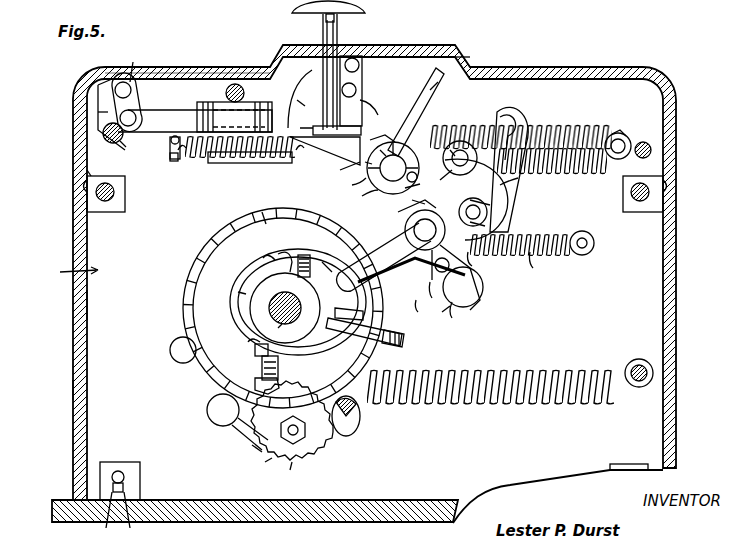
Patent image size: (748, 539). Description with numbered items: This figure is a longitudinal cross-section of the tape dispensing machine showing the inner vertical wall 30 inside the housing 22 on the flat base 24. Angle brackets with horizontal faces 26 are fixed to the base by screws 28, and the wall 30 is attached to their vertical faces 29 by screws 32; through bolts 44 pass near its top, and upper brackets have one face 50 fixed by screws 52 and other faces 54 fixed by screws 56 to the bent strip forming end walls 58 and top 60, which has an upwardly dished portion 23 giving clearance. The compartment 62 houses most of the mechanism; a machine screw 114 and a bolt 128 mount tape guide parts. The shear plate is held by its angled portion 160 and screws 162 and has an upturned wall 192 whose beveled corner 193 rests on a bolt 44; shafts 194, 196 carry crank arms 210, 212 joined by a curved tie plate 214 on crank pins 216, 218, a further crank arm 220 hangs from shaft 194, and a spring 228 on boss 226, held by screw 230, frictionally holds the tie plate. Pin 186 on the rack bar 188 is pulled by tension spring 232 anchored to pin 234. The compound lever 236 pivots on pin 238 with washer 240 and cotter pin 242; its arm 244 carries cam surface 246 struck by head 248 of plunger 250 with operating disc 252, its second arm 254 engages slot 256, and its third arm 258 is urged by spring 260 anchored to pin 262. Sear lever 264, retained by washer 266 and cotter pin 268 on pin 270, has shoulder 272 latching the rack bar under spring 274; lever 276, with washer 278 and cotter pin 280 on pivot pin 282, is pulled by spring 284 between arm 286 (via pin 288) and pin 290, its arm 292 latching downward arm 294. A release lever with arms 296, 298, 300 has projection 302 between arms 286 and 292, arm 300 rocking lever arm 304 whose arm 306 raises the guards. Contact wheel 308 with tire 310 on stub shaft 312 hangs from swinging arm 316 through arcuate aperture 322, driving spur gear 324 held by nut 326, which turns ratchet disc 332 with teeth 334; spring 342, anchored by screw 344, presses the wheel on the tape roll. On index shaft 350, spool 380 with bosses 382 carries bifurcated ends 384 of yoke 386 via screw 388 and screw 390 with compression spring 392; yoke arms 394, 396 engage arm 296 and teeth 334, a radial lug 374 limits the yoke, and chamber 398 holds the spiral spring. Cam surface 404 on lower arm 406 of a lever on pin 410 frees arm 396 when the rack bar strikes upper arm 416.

The housing 22 is at (655, 72).
The upwardly-dished portion 23 is at (425, 50).
The base 24 is at (405, 522).
The horizontal faces 26 is at (138, 515).
The screws 28 is at (101, 515).
The vertical faces 29 is at (120, 462).
The inner vertical wall 30 is at (568, 78).
The screws 32 is at (125, 473).
The through bolts 44 is at (102, 132).
The bracket face 50 is at (108, 212).
The screws 52 is at (116, 186).
The bracket faces 54 is at (85, 200).
The screws 56 is at (85, 178).
The end walls 58 is at (73, 388).
The top 60 is at (210, 72).
The compartment 62 is at (65, 274).
The machine screw 114 is at (262, 218).
The bolt 128 is at (170, 355).
The downwardly angled portion 160 is at (246, 163).
The screws 162 is at (242, 164).
The vertical pin 186 is at (170, 156).
The rack bar 188 is at (405, 128).
The vertical wall 192 is at (97, 92).
The beveled corner 193 is at (98, 116).
The shaft 194 is at (357, 90).
The shaft 196 is at (145, 63).
The crank arm 210 is at (364, 70).
The crank arm 212 is at (136, 100).
The curved tie plate 214 is at (166, 132).
The crank pin 216 is at (360, 65).
The crank pin 218 is at (115, 152).
The crank arm 220 is at (304, 95).
The boss 226 is at (292, 86).
The spring 228 is at (270, 112).
The screw 230 is at (226, 92).
The tension spring 232 is at (181, 167).
The pin 234 is at (338, 172).
The compound lever 236 is at (346, 191).
The pin 238 is at (358, 204).
The washer 240 is at (371, 148).
The cotter pin 242 is at (398, 213).
The arm 244 is at (349, 177).
The cam surface 246 is at (325, 151).
The head 248 is at (337, 130).
The plunger 250 is at (322, 31).
The operating disc 252 is at (348, 16).
The second arm 254 is at (450, 140).
The elongated slot 256 is at (465, 125).
The third arm 258 is at (442, 90).
The tension spring 260 is at (565, 130).
The pin 262 is at (620, 132).
The lever 264 is at (500, 196).
The washer 266 is at (428, 189).
The cotter pin 268 is at (429, 177).
The pin 270 is at (478, 136).
The shouldered portion 272 is at (516, 124).
The tension spring 274 is at (566, 172).
The lever 276 is at (405, 255).
The washer 278 is at (413, 240).
The cotter pin 280 is at (428, 270).
The pivot pin 282 is at (400, 238).
The tension spring 284 is at (545, 268).
The arm 286 is at (459, 282).
The pin 288 is at (459, 313).
The pin 290 is at (594, 246).
The arm 292 is at (520, 241).
The arm 294 is at (500, 208).
The arm 296 is at (331, 257).
The arm 298 is at (478, 272).
The arm 300 is at (433, 202).
The laterally projecting portion 302 is at (495, 265).
The lever arm 304 is at (393, 168).
The arm 306 is at (382, 102).
The contact wheel 308 is at (252, 450).
The tire 310 is at (232, 434).
The stub shaft 312 is at (318, 460).
The swinging arm 316 is at (345, 437).
The arcuate aperture 322 is at (208, 420).
The spur gear 324 is at (268, 468).
The nut 326 is at (293, 470).
The ratchet disc 332 is at (192, 254).
The teeth 334 is at (207, 244).
The tension spring 342 is at (490, 404).
The screw 344 is at (633, 360).
The index shaft 350 is at (285, 308).
The radial lug 374 is at (291, 330).
The spool 380 is at (238, 320).
The bosses 382 is at (244, 298).
The bifurcated ends 384 is at (280, 256).
The yoke 386 is at (352, 340).
The screw 388 is at (302, 255).
The screw 390 is at (278, 388).
The compression spring 392 is at (280, 372).
The arm 394 is at (356, 306).
The arm 396 is at (410, 338).
The housing 398 is at (238, 288).
The cam surface 404 is at (411, 314).
The lower arm 406 is at (424, 299).
The pin 410 is at (504, 223).
The upper arm 416 is at (522, 183).